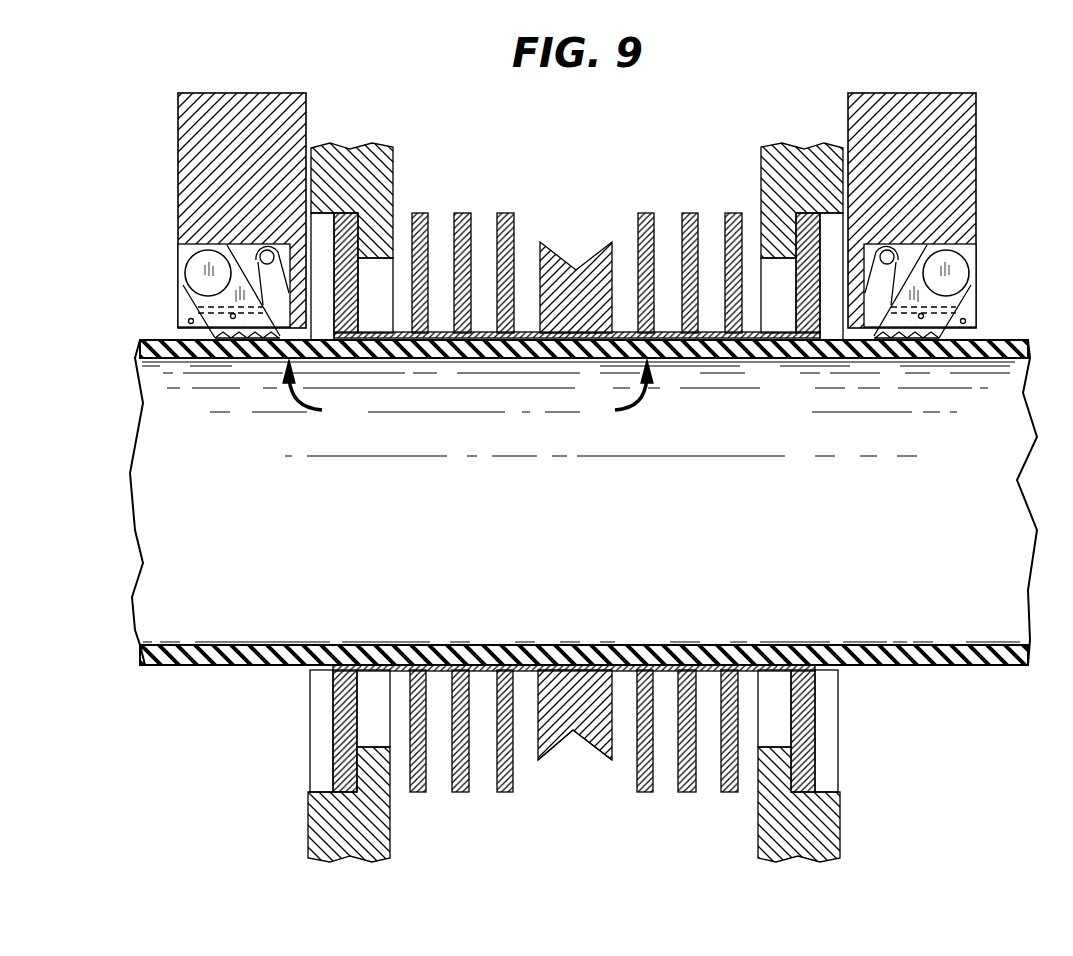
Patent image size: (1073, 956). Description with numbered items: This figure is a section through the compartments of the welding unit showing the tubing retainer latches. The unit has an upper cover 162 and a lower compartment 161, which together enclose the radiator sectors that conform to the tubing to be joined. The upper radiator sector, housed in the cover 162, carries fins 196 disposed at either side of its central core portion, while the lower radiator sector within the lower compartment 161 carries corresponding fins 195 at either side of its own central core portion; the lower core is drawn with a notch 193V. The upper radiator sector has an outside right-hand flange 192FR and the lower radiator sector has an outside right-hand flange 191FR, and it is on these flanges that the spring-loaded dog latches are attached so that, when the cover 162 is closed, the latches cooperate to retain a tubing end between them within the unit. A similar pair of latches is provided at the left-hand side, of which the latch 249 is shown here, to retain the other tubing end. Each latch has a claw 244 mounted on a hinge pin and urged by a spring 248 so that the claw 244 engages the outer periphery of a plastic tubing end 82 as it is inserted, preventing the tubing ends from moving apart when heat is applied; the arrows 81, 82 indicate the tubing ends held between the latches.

The latch 249 is at (178, 167).
The spring 248 is at (913, 243).
The claw 244 is at (976, 301).
The upper cover 162 is at (398, 158).
The lower compartment 161 is at (392, 812).
The fins 196 is at (638, 218).
The fins 195 is at (637, 792).
The V-shaped notch 193V is at (573, 733).
The outside right-hand flange of the upper radiator sector 192FR is at (790, 293).
The outside right-hand flange of the lower radiator sector 191FR is at (790, 700).
The flow direction arrow 81 is at (320, 394).
The tubing end 82 is at (620, 394).